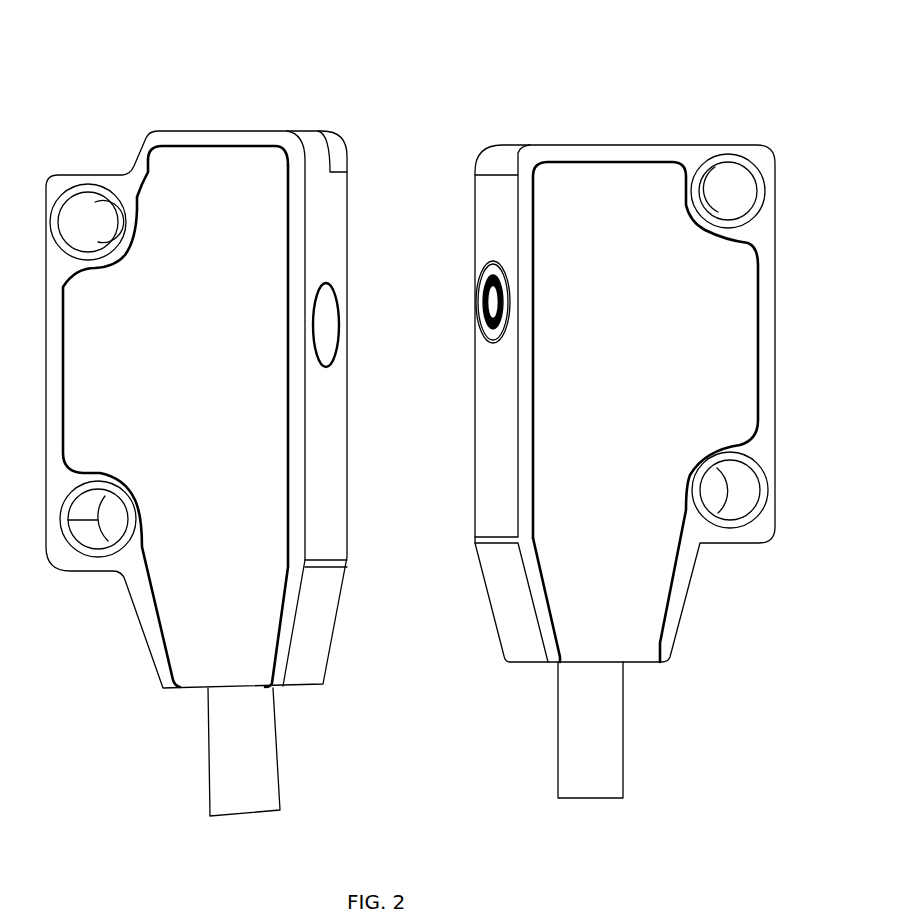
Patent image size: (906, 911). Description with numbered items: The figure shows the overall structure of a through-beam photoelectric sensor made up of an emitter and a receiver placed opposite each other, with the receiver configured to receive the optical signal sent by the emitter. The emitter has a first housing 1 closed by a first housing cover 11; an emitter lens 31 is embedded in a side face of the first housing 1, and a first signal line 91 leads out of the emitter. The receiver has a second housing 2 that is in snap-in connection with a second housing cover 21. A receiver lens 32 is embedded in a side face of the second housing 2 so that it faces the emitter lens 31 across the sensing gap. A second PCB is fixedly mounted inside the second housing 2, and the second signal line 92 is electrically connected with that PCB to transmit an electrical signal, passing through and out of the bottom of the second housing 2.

The first housing 1 is at (586, 382).
The second housing 2 is at (231, 388).
The first housing cover 11 is at (618, 595).
The second housing cover 21 is at (212, 597).
The emitter lens 31 is at (475, 323).
The receiver lens 32 is at (324, 320).
The first signal line 91 is at (583, 748).
The second signal line 92 is at (245, 770).